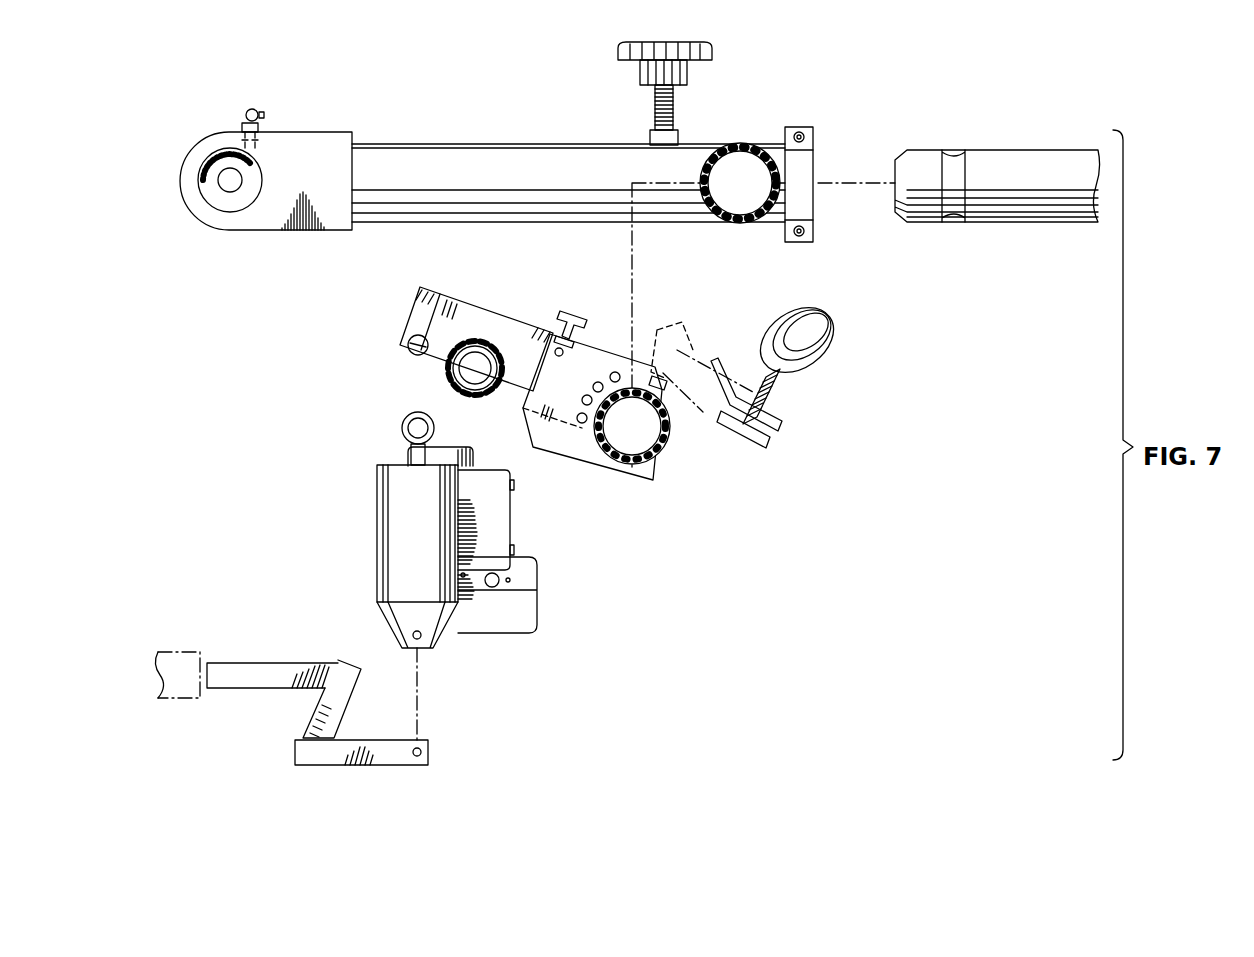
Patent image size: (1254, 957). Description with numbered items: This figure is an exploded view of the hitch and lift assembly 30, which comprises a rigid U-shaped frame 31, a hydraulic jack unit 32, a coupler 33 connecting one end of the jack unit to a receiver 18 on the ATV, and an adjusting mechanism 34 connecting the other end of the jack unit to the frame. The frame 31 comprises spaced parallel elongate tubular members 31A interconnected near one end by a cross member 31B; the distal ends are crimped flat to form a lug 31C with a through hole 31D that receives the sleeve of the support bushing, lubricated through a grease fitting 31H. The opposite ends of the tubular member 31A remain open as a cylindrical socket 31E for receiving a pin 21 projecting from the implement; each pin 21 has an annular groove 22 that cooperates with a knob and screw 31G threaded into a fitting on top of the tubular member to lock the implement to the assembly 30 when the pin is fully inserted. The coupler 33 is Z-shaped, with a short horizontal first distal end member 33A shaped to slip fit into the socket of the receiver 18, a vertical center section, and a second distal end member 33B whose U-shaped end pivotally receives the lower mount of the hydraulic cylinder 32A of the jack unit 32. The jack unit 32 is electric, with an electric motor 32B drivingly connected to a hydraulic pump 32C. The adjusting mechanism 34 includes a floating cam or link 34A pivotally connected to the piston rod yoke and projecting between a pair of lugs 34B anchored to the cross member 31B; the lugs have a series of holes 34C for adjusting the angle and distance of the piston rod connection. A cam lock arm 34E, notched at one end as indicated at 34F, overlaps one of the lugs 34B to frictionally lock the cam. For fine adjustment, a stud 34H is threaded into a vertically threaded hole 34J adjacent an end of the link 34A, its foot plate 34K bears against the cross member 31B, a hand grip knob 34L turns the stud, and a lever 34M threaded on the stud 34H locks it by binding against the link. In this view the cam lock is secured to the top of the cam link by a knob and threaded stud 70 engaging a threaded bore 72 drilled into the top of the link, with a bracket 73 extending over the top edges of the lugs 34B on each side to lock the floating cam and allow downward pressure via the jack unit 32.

The receiver 18 is at (172, 650).
The pin 21 is at (998, 157).
The annular groove 22 is at (952, 152).
The hitch and lift assembly 30 is at (755, 568).
The U-shaped frame 31 is at (531, 132).
The tubular member 31A is at (452, 150).
The cross member 31B is at (699, 147).
The lug 31C is at (300, 132).
The through hole 31D is at (217, 163).
The cylindrical socket 31E is at (808, 162).
The knob and screw 31G is at (712, 50).
The grease fitting 31H is at (248, 108).
The hydraulic jack unit 32 is at (362, 528).
The hydraulic cylinder 32A is at (373, 491).
The electric motor 32B is at (507, 536).
The hydraulic pump 32C is at (447, 443).
The coupler 33 is at (302, 648).
The first distal end member 33A is at (247, 665).
The second distal end member 33B is at (400, 753).
The adjusting mechanism 34 is at (493, 300).
The floating cam or link 34A is at (458, 302).
The lug 34B is at (563, 310).
The holes 34C is at (580, 454).
The cam lock arm 34E is at (418, 317).
The notch 34F is at (408, 345).
The stud 34H is at (780, 395).
The threaded hole 34J is at (641, 345).
The foot plate 34K is at (773, 445).
The hand grip knob 34L is at (834, 330).
The lever 34M is at (705, 405).
The knob and threaded stud 70 is at (572, 332).
The threaded bore 72 is at (665, 378).
The bracket 73 is at (582, 366).